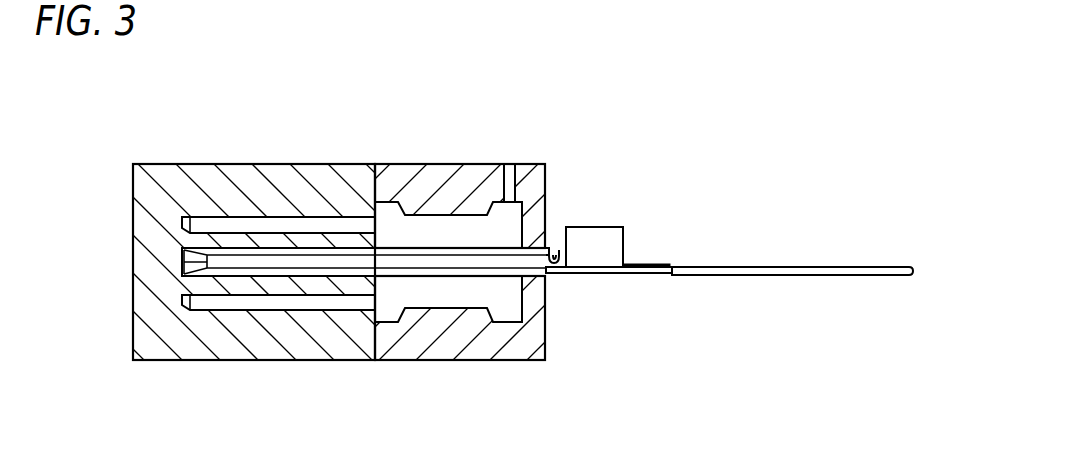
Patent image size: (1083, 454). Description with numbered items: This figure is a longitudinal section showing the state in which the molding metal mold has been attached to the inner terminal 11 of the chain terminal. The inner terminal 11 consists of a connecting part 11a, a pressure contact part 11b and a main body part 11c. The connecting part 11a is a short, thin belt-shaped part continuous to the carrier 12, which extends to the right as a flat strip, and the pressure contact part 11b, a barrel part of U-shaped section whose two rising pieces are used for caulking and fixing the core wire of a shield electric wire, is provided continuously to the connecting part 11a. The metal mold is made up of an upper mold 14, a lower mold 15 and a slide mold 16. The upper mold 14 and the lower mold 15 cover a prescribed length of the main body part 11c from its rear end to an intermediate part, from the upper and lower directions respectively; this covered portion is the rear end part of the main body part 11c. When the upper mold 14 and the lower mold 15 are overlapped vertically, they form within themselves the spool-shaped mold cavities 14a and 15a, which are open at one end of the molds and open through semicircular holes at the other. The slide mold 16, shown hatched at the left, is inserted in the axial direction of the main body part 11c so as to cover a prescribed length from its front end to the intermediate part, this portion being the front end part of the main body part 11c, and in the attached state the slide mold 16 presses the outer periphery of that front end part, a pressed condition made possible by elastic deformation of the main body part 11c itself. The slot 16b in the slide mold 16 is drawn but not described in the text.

The inner terminal 11 is at (553, 247).
The connecting part 11a is at (655, 267).
The pressure contact part 11b is at (607, 227).
The main body part 11c is at (323, 258).
The carrier 12 is at (810, 267).
The upper mold 14 is at (447, 163).
The mold cavity 14a is at (424, 232).
The lower mold 15 is at (548, 336).
The mold cavity 15a is at (478, 298).
The slide mold 16 is at (155, 164).
The housing slot 16b is at (233, 222).